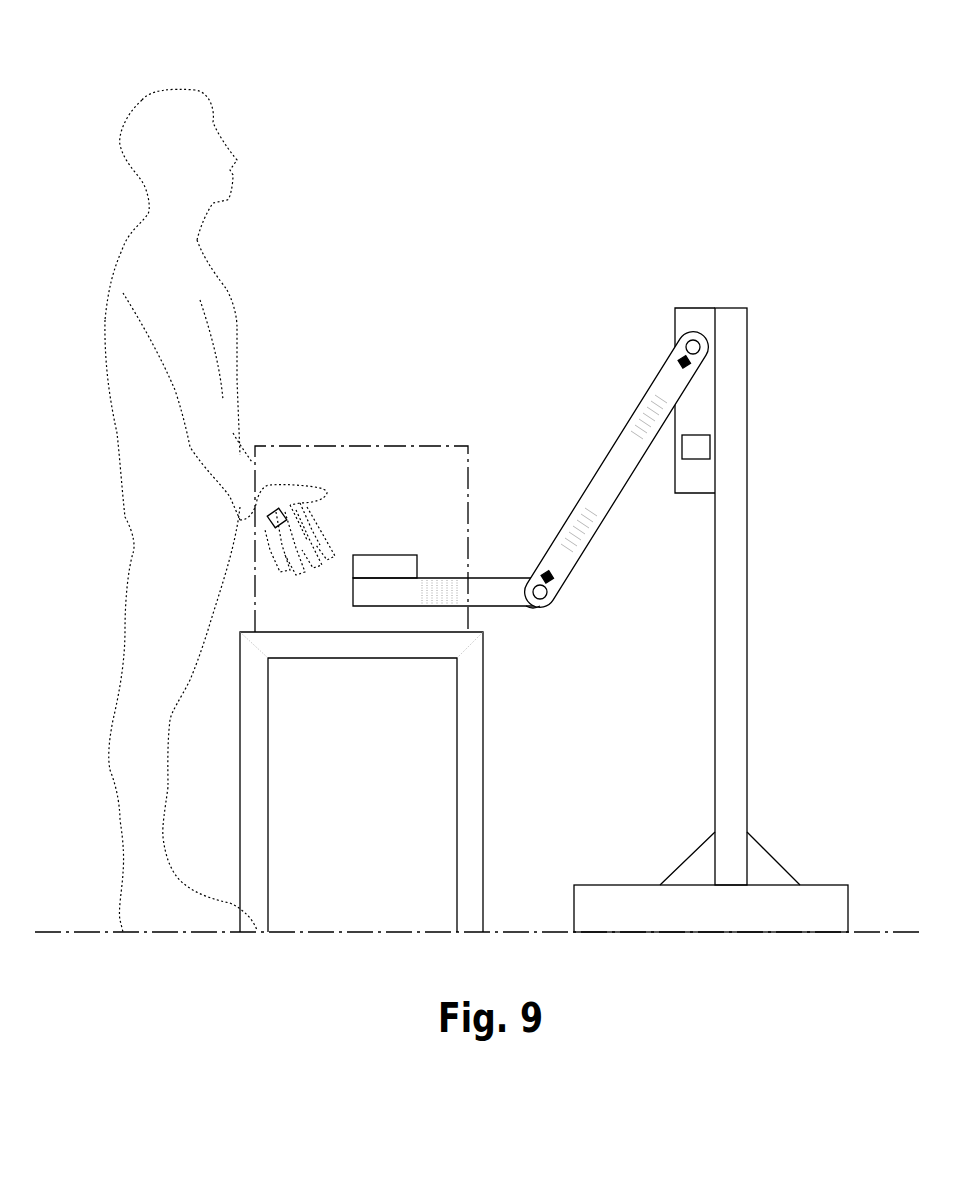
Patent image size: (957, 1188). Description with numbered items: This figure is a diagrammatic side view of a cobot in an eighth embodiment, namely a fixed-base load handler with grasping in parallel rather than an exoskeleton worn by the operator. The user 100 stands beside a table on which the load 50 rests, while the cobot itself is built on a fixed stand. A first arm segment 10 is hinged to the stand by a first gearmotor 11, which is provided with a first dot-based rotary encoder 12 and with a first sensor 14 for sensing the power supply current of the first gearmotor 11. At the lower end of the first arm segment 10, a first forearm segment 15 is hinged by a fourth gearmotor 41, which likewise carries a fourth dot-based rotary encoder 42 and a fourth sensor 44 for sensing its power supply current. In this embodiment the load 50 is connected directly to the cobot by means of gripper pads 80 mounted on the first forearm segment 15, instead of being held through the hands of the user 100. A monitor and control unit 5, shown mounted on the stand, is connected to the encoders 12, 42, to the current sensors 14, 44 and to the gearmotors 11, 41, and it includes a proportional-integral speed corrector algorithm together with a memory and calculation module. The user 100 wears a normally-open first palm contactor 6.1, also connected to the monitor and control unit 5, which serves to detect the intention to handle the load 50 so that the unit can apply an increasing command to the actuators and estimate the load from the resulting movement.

The user 100 is at (222, 92).
The first palm contactor 6.1 is at (262, 521).
The load 50 is at (421, 462).
The gripper pads 80 is at (390, 562).
The first forearm segment 15 is at (500, 588).
The first arm segment 10 is at (607, 477).
The first gearmotor 11 is at (700, 340).
The first dot-based rotary encoder 12 is at (686, 341).
The first sensor 14 is at (679, 361).
The monitor and control unit 5 is at (711, 446).
The fourth gearmotor 41 is at (537, 608).
The fourth dot-based rotary encoder 42 is at (547, 600).
The fourth sensor 44 is at (553, 587).